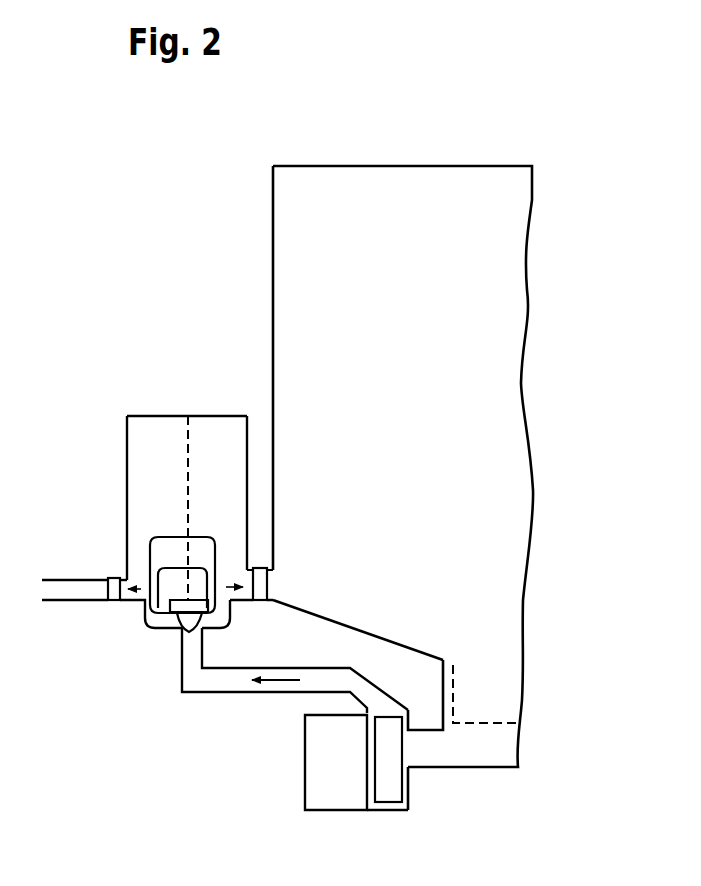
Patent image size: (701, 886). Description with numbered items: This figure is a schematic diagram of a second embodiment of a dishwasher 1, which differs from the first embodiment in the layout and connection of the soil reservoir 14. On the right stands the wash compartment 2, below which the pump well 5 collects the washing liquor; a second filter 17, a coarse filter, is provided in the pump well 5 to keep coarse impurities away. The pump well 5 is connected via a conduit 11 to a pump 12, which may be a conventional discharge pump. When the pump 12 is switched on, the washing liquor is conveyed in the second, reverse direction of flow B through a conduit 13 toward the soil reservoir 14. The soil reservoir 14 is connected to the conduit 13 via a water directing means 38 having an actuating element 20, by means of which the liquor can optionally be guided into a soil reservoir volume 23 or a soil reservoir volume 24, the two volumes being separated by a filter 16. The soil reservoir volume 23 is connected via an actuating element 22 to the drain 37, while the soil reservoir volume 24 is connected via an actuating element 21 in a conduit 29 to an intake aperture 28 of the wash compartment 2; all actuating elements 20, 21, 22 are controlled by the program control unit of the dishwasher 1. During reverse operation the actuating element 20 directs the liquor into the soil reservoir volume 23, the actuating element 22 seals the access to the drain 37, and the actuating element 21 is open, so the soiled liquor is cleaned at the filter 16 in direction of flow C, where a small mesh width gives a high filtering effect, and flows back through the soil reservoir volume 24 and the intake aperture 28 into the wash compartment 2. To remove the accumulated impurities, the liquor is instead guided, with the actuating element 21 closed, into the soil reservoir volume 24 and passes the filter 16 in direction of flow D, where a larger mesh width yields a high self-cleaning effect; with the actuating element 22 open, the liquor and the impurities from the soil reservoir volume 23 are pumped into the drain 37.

The dishwasher 1 is at (369, 402).
The wash compartment 2 is at (272, 222).
The pump well 5 is at (434, 665).
The conduit 11 is at (470, 768).
The pump 12 is at (338, 798).
The conduit 13 is at (294, 691).
The soil reservoir 14 is at (154, 464).
The filter 16 is at (195, 440).
The second filter 17 is at (457, 690).
The actuating element 20 is at (186, 613).
The actuating element 21 is at (262, 601).
The actuating element 22 is at (114, 604).
The soil reservoir volume 23 is at (150, 440).
The soil reservoir volume 24 is at (225, 445).
The intake aperture 28 is at (277, 598).
The conduit 29 is at (259, 568).
The drain 37 is at (63, 601).
The water directing means 38 is at (127, 638).
The second direction of flow B is at (281, 684).
The direction of flow C is at (228, 562).
The direction of flow D is at (163, 537).